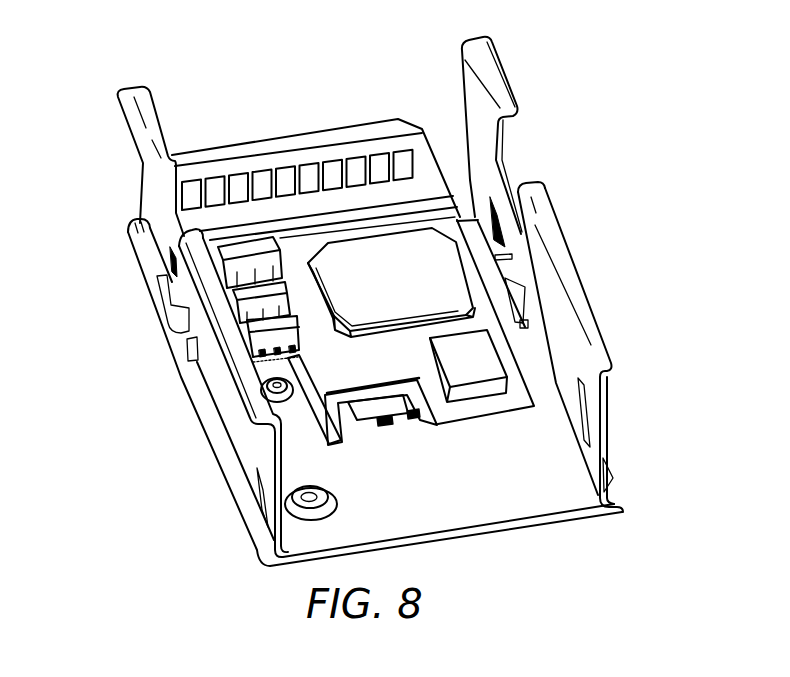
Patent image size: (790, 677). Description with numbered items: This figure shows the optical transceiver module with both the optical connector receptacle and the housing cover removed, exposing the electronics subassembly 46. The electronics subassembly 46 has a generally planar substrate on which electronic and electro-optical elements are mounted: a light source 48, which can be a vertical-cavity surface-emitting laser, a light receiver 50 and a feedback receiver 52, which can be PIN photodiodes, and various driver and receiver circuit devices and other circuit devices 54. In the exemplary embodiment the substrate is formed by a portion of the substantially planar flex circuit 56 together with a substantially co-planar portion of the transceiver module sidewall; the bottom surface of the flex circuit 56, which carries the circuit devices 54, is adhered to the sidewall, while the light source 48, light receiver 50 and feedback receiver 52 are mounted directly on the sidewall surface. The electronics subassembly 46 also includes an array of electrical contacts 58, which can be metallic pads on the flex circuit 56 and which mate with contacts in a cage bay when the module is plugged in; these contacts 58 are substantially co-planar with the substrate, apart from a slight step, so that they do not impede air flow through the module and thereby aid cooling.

The electronics subassembly 46 is at (216, 145).
The light source 48 is at (393, 421).
The light receiver 50 is at (413, 416).
The feedback receiver 52 is at (382, 421).
The circuit devices 54 is at (237, 253).
The flex circuit 56 is at (320, 380).
The array of electrical contacts 58 is at (306, 160).